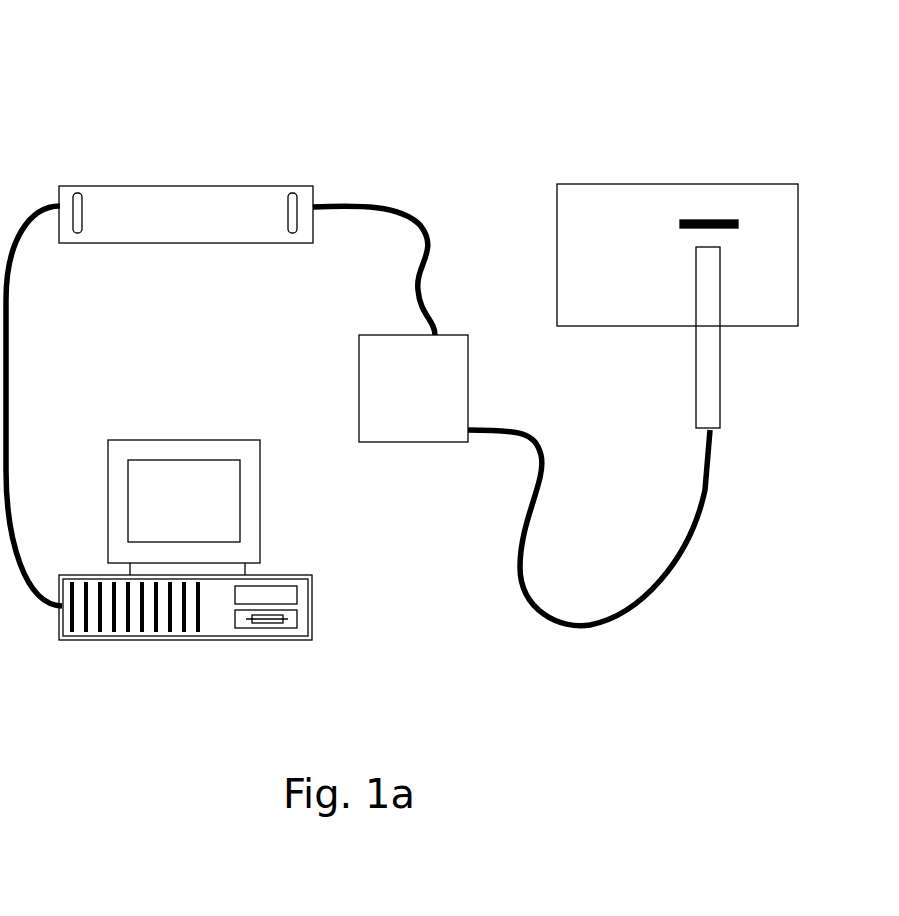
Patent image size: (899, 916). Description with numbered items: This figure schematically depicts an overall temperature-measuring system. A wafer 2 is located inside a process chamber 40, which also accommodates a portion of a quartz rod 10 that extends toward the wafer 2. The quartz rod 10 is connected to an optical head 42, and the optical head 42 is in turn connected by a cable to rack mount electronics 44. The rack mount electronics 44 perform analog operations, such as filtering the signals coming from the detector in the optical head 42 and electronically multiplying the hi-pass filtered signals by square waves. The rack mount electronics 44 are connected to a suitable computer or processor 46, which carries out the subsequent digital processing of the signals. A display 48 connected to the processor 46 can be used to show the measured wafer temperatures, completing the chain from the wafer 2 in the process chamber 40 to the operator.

The sample 2 is at (708, 220).
The probe 10 is at (712, 403).
The sample chamber 40 is at (610, 207).
The signal processing unit 42 is at (397, 428).
The interface unit 44 is at (150, 210).
The computer 46 is at (215, 627).
The monitor 48 is at (150, 475).